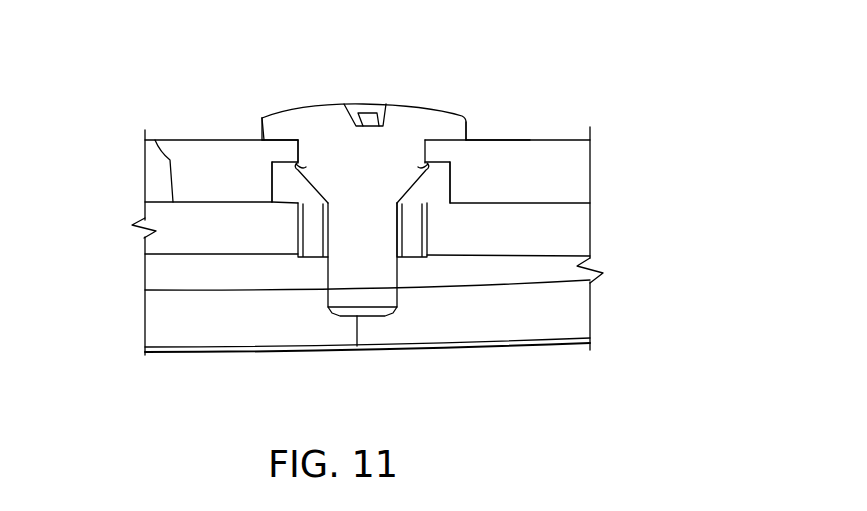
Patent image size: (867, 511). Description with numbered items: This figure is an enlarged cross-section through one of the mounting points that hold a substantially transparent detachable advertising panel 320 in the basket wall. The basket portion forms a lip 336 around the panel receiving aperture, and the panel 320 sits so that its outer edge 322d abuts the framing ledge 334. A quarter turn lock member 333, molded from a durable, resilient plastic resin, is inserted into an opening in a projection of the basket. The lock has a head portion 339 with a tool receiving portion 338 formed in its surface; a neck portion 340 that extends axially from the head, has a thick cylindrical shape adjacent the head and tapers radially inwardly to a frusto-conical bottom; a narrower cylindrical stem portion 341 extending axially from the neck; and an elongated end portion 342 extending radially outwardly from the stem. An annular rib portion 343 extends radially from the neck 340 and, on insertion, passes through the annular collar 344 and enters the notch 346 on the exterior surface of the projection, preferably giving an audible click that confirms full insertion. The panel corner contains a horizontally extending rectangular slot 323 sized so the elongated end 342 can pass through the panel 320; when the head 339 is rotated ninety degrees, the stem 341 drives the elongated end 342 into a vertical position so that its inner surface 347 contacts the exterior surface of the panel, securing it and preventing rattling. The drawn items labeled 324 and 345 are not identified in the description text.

The advertising panel 320 is at (573, 238).
The outer edge 322d is at (155, 140).
The rectangular slot 323 is at (314, 232).
The flange 324 is at (319, 265).
The quarter turn lock member 333 is at (259, 138).
The framing ledge 334 is at (428, 150).
The lip 336 is at (208, 142).
The tool receiving portion 338 is at (377, 113).
The head portion 339 is at (303, 120).
The neck portion 340 is at (450, 165).
The stem portion 341 is at (377, 235).
The elongated end portion 342 is at (353, 317).
The annular rib portion 343 is at (298, 166).
The annular collar 344 is at (284, 153).
The shoulder 345 is at (471, 137).
The notch 346 is at (278, 187).
The inner surface 347 is at (440, 146).